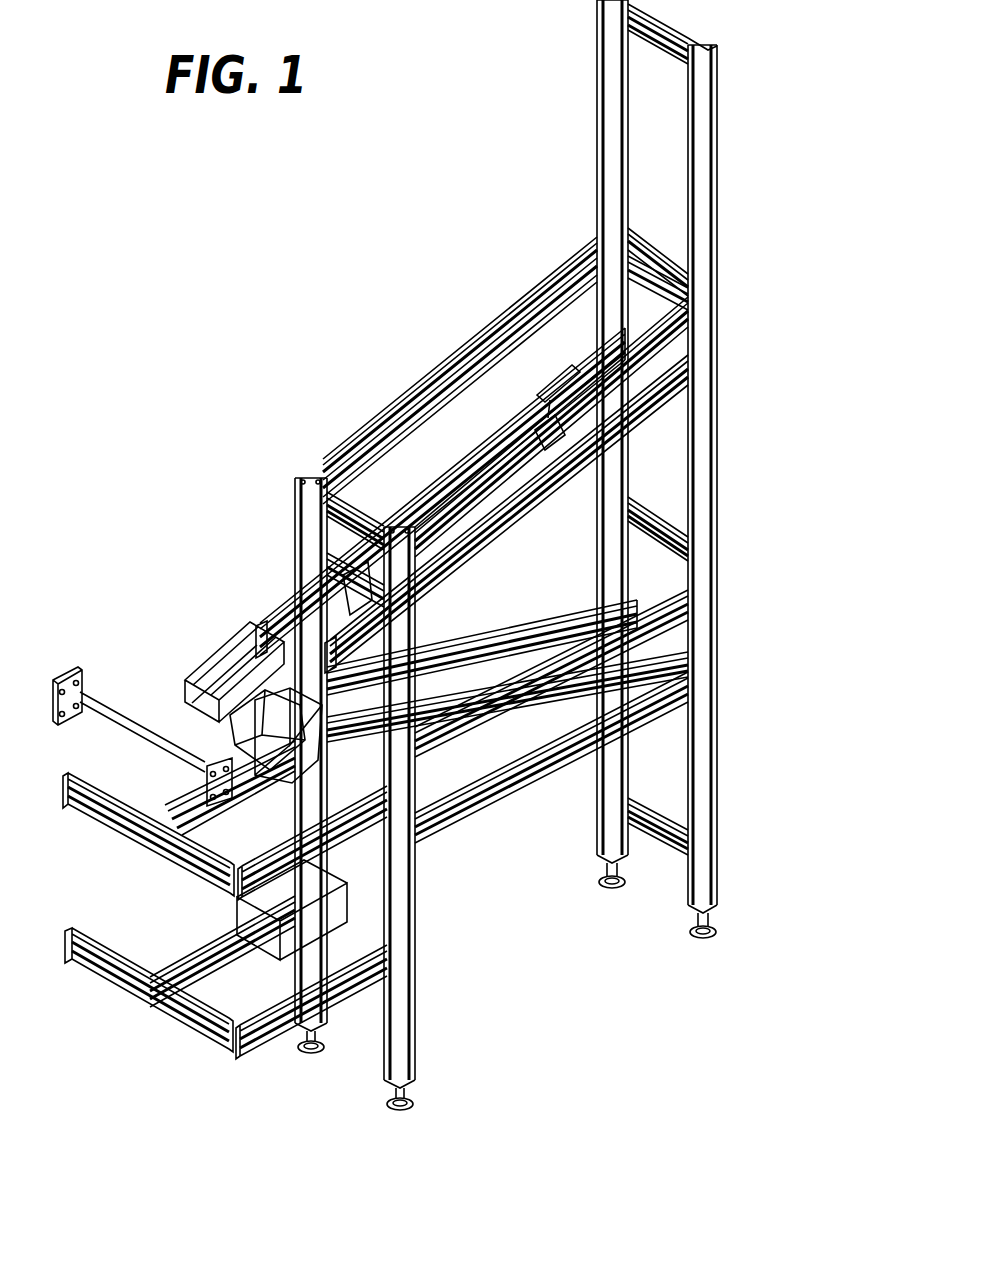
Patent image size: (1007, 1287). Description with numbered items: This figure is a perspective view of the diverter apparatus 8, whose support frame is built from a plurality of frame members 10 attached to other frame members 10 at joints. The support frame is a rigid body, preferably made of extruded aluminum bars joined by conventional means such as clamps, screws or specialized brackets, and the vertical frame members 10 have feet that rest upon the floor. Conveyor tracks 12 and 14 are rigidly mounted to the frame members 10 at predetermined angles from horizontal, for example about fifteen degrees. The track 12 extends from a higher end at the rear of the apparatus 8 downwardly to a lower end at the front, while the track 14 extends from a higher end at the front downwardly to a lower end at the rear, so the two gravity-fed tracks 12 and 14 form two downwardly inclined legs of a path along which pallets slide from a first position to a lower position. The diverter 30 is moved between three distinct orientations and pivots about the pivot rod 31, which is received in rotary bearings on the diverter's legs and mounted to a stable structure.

The diverter apparatus 8 is at (804, 326).
The frame members 10 is at (560, 268).
The conveyor track 12 is at (530, 492).
The conveyor track 14 is at (606, 663).
The diverter 30 is at (200, 640).
The pivot rod 31 is at (120, 708).